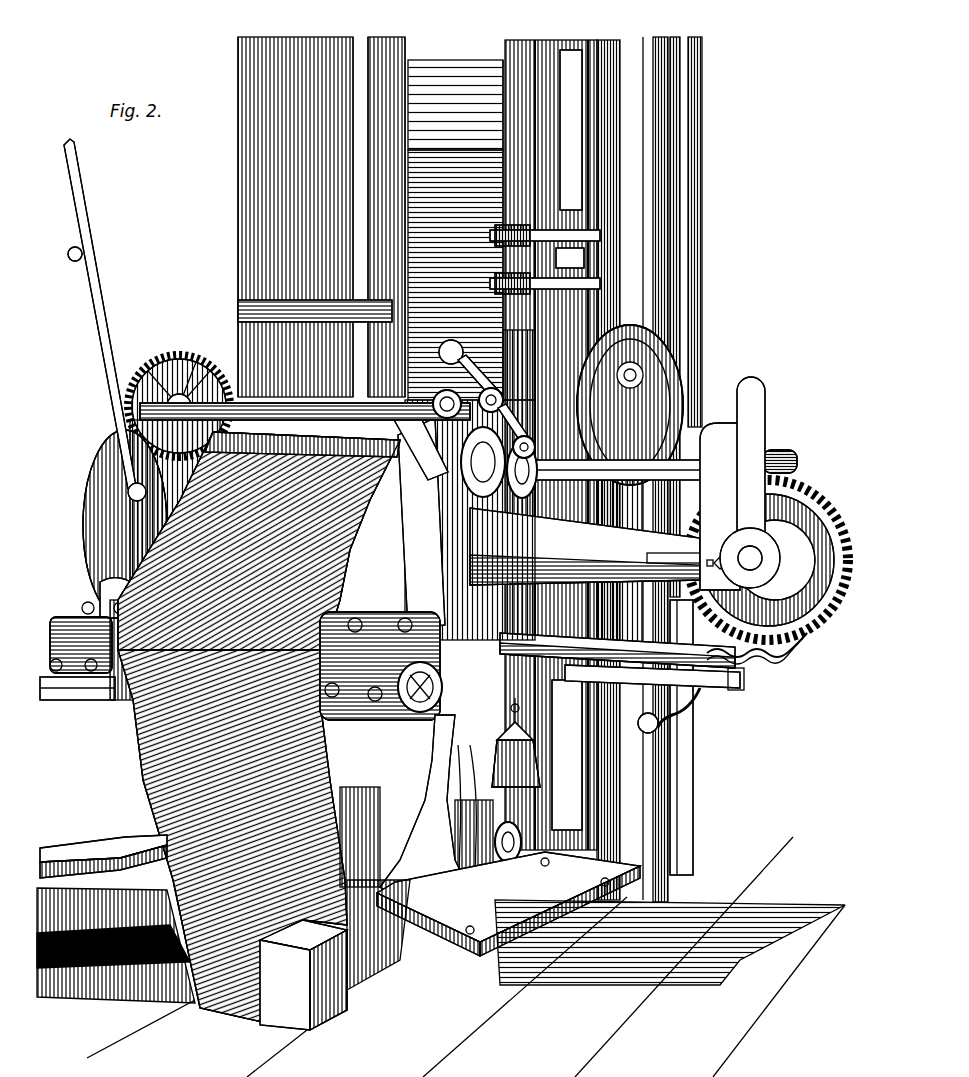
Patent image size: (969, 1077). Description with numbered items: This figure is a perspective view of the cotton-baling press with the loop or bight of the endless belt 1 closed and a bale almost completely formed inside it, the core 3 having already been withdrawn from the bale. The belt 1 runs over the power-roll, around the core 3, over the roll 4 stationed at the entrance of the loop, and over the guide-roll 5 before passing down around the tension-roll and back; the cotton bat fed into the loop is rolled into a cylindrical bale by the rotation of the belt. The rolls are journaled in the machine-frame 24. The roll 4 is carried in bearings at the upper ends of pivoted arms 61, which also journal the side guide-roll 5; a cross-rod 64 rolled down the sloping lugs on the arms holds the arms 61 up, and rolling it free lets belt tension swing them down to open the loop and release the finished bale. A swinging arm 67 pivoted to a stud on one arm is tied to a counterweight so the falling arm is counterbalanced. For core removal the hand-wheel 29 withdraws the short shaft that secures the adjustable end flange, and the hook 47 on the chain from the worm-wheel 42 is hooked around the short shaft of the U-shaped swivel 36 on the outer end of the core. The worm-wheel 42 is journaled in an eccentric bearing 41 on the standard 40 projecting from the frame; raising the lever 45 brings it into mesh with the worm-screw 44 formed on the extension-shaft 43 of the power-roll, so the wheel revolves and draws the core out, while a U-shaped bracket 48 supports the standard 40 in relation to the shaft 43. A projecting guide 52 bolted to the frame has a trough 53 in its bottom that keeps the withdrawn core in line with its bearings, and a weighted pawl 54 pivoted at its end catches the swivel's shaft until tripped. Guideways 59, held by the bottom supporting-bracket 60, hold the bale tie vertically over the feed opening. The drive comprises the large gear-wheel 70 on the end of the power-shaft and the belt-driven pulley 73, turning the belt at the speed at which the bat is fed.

The endless belt 1 is at (141, 767).
The core 3 is at (617, 643).
The roll 4 is at (420, 446).
The guide-roll 5 is at (83, 651).
The machine-frame 24 is at (430, 807).
The hand-wheel 29 is at (104, 603).
The U-shaped swivel 36 is at (508, 904).
The standard 40 is at (585, 546).
The eccentric bearing 41 is at (757, 556).
The worm-wheel 42 is at (820, 494).
The extension-shaft 43 is at (562, 462).
The worm-screw 44 is at (792, 462).
The lever 45 is at (757, 482).
The hook 47 is at (757, 648).
The U-shaped bracket 48 is at (720, 423).
The projecting guide 52 is at (718, 690).
The trough 53 is at (740, 682).
The weighted pawl 54 is at (660, 723).
The guideways 59 is at (310, 217).
The bottom supporting-bracket 60 is at (474, 387).
The pivoted arms 61 is at (421, 524).
The cross-rod 64 is at (305, 403).
The swinging arm 67 is at (105, 320).
The large gear-wheel 70 is at (186, 357).
The pulley 73 is at (96, 577).